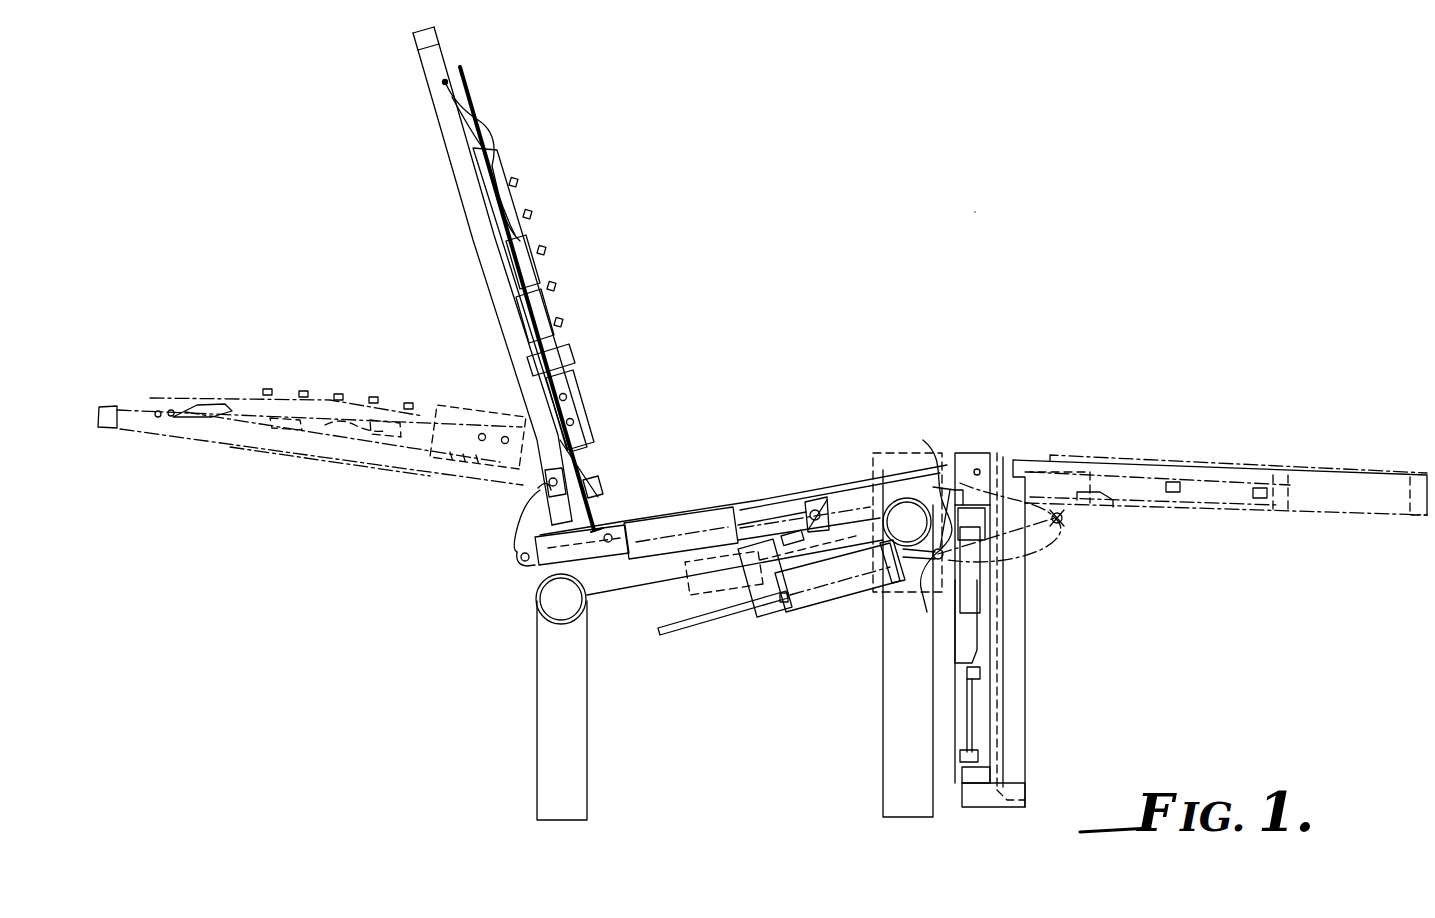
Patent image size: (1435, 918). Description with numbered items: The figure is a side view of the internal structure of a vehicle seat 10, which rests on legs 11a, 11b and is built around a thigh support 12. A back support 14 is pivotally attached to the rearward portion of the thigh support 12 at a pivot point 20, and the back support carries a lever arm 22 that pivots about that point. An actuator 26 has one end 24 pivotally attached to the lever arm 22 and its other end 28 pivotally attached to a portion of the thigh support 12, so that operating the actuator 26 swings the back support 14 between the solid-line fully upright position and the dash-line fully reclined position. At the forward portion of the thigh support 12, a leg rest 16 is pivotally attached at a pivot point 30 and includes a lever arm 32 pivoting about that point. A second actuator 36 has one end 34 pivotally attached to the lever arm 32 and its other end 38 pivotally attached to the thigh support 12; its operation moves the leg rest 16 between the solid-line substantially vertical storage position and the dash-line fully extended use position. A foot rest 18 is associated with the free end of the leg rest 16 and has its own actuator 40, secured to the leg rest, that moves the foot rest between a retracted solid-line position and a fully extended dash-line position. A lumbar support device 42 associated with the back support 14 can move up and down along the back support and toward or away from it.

The vehicle seat 10 is at (974, 213).
The leg 11a is at (540, 757).
The leg 11b is at (890, 770).
The thigh support 12 is at (797, 453).
The back support 14 is at (514, 85).
The leg rest 16 is at (1134, 449).
The foot rest 18 is at (1352, 470).
The pivot point 20 is at (572, 468).
The lever arm 22 is at (527, 521).
The end of actuator 24 is at (520, 570).
The actuator 26 is at (690, 517).
The end of actuator 28 is at (822, 500).
The pivot point 30 is at (983, 458).
The lever arm 32 is at (922, 516).
The end of actuator 34 is at (930, 600).
The actuator 36 is at (840, 600).
The end of actuator 38 is at (780, 620).
The actuator 40 is at (985, 637).
The lumbar support device 42 is at (561, 296).